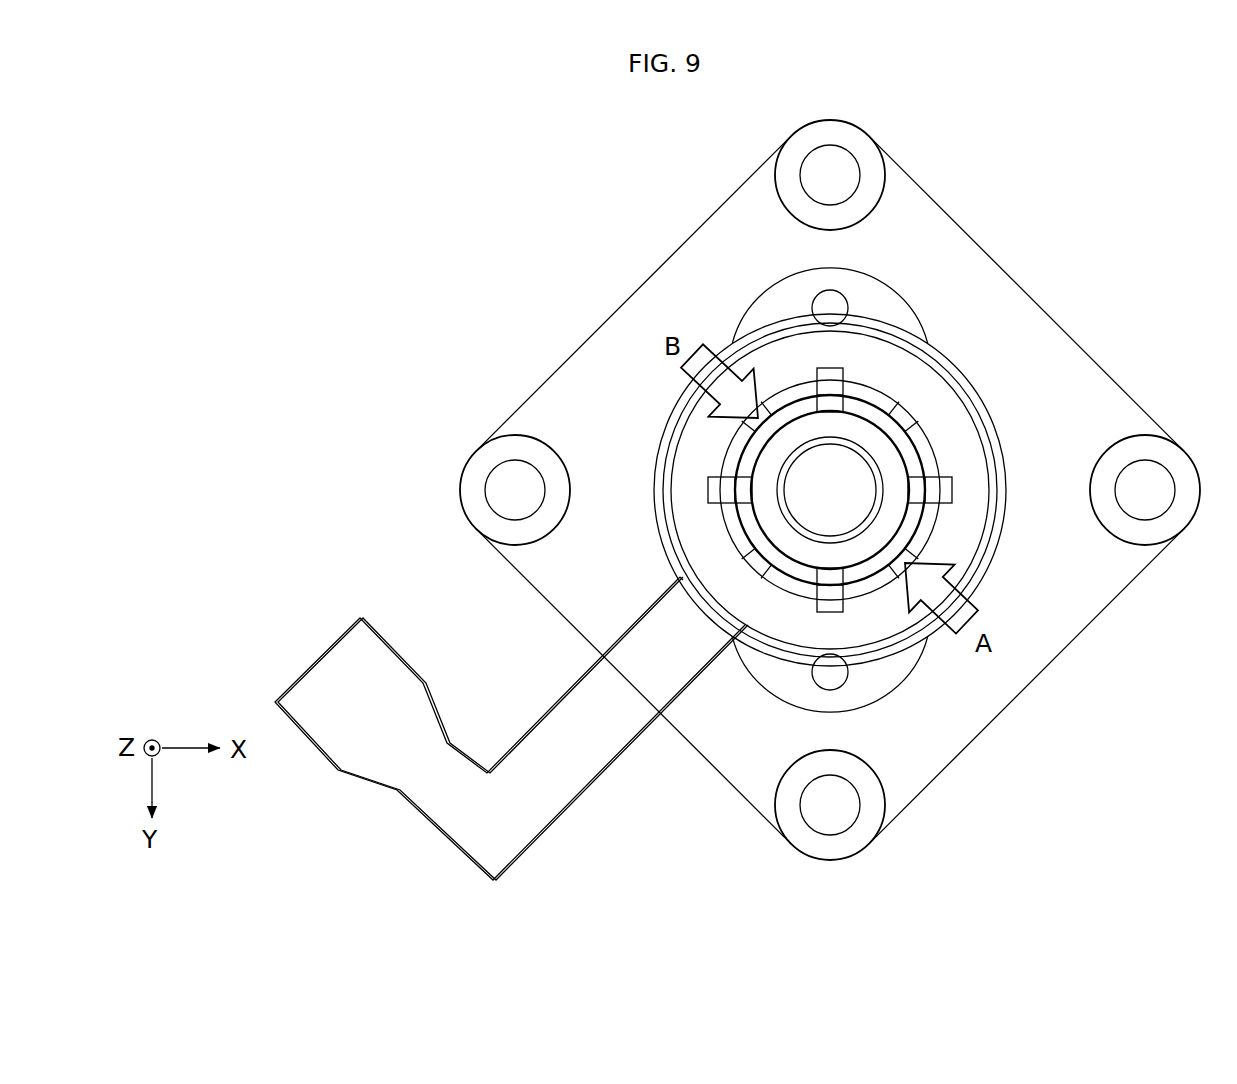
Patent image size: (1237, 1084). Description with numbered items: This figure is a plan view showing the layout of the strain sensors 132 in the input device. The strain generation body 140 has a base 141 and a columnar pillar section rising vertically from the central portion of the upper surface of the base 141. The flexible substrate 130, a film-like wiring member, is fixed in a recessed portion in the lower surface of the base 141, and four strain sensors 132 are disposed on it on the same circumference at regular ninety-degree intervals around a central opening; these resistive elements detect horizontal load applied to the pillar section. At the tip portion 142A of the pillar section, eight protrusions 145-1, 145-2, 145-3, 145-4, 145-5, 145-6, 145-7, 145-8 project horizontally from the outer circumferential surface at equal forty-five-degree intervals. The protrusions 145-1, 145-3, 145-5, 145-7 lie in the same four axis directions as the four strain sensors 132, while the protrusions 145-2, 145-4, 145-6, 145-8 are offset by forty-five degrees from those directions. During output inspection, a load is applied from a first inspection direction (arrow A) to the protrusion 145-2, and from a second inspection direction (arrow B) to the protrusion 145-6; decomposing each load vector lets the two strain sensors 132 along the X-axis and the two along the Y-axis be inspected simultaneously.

The flexible substrate 130 is at (539, 853).
The strain sensors 132 is at (912, 318).
The strain generation body 140 is at (916, 168).
The base 141 is at (1128, 412).
The tip portion 142A is at (916, 429).
The protrusion 145-1 is at (925, 472).
The protrusion 145-2 is at (905, 545).
The protrusion 145-3 is at (847, 578).
The protrusion 145-4 is at (760, 548).
The protrusion 145-5 is at (724, 478).
The protrusion 145-6 is at (773, 415).
The protrusion 145-7 is at (812, 395).
The protrusion 145-8 is at (890, 420).